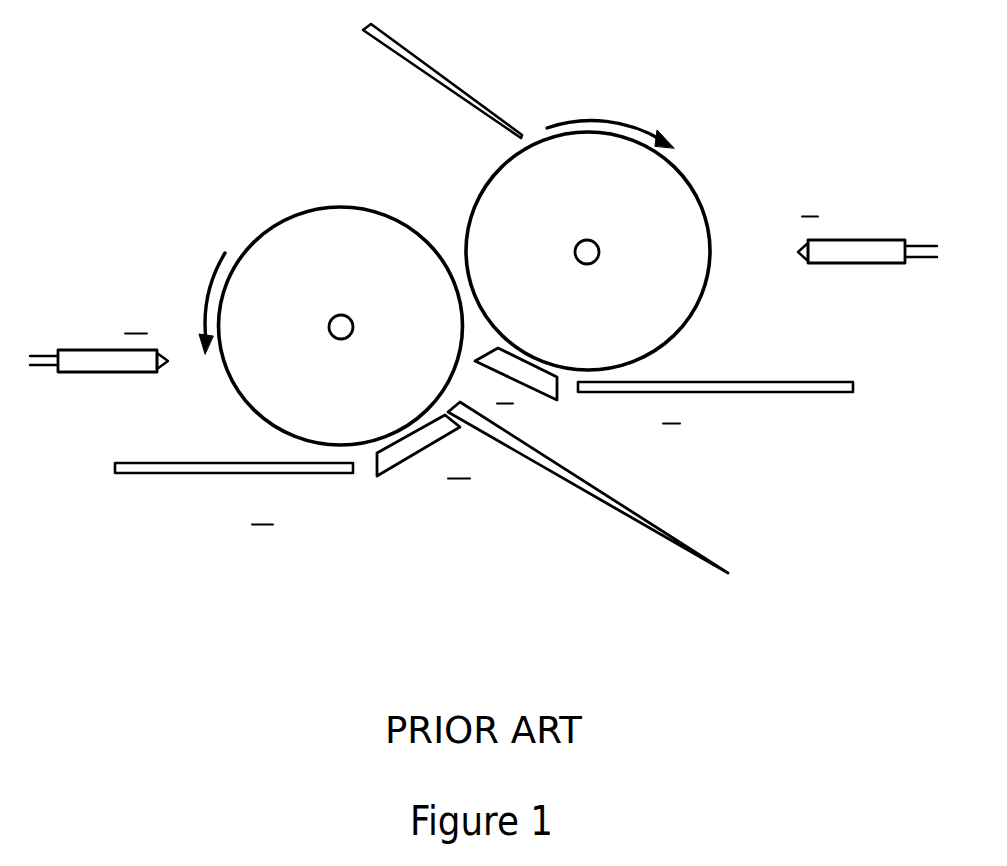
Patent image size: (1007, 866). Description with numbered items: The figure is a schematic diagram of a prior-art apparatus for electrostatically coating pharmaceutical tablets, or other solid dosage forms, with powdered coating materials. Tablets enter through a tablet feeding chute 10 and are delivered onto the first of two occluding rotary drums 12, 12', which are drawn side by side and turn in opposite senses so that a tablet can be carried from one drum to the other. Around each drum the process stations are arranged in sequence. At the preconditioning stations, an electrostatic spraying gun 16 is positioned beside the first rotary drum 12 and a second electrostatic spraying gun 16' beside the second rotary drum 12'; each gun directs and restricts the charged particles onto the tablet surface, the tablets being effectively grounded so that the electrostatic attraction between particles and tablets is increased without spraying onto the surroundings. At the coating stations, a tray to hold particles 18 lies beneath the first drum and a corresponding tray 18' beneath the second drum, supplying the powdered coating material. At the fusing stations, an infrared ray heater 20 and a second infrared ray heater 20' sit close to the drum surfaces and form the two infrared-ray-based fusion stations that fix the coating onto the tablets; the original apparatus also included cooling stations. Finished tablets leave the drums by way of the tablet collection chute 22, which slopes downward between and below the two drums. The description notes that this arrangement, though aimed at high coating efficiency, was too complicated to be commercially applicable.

The tablet feeding chute 10 is at (443, 77).
The rotary drum 12 is at (632, 239).
The rotary drum 12' is at (308, 319).
The electrostatic spraying gun 16 is at (867, 228).
The electrostatic spraying gun 16' is at (99, 331).
The tray to hold particles 18 is at (715, 429).
The tray to hold particles 18' is at (234, 508).
The infrared ray heater 20 is at (539, 395).
The infrared ray heater 20' is at (423, 479).
The tablet collection chute 22 is at (568, 487).